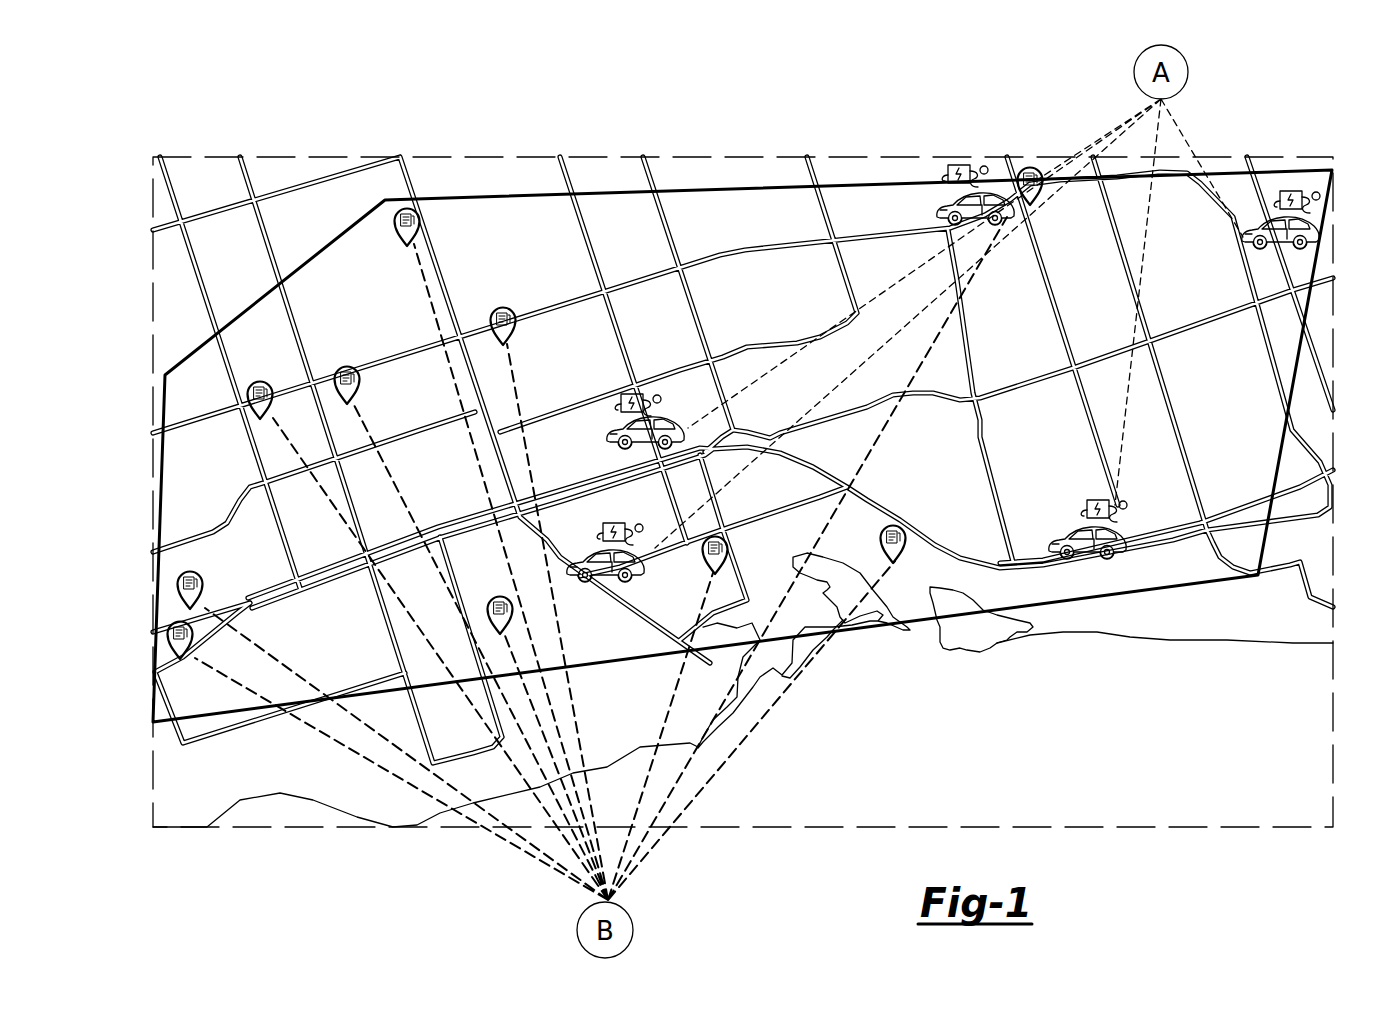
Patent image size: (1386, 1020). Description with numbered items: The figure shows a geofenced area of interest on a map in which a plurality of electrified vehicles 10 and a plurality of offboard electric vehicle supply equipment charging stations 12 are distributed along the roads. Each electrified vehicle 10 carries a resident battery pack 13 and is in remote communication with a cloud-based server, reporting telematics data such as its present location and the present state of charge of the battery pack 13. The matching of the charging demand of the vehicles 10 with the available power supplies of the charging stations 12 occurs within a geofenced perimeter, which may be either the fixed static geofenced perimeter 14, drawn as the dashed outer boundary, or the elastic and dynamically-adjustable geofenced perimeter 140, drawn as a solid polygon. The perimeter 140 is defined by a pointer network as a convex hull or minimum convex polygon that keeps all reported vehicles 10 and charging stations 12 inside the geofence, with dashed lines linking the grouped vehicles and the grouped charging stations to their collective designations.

The electrified vehicle 10 is at (622, 437).
The electric vehicle supply equipment charging station 12 is at (398, 231).
The resident battery pack 13 is at (632, 392).
The fixed static geofenced perimeter 14 is at (1207, 828).
The elastic dynamically-adjustable geofenced perimeter 140 is at (1126, 594).